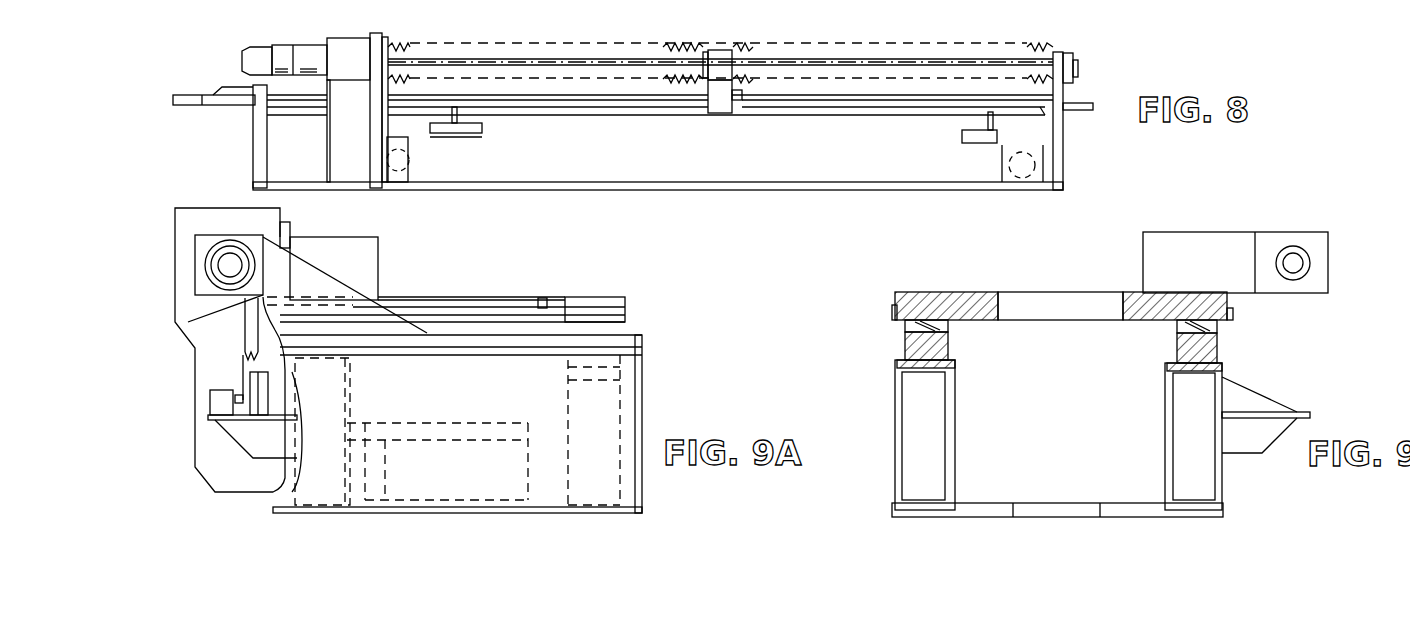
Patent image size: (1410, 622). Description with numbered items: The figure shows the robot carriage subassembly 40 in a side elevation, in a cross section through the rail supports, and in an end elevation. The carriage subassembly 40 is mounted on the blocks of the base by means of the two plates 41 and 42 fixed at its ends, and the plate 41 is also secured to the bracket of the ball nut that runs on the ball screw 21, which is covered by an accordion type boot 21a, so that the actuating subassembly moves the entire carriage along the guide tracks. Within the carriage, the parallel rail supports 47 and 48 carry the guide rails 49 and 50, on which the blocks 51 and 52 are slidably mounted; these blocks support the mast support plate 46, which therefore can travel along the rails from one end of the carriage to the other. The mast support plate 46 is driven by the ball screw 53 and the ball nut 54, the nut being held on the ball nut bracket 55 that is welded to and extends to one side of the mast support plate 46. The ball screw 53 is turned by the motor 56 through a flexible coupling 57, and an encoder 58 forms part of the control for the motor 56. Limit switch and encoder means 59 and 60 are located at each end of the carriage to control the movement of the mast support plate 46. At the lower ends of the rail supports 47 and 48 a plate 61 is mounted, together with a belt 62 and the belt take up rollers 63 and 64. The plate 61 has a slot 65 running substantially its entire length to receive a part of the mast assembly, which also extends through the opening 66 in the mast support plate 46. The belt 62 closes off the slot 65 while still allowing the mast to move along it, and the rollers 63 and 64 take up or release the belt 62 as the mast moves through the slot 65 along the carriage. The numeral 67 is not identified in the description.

In FIG. 9, the ball screw 21 is at (1293, 280).
In FIG. 8, the accordion type boot 21a is at (405, 45).
In FIG. 9A, the carriage subassembly 40 is at (480, 298).
In FIG. 9, the carriage subassembly 40 is at (1050, 292).
In FIG. 8, the plate 41 is at (225, 105).
In FIG. 8, the plate 42 is at (1085, 110).
In FIG. 8, the mast support plate 46 is at (672, 68).
In FIG. 9A, the mast support plate 46 is at (545, 304).
In FIG. 9, the mast support plate 46 is at (990, 318).
In FIG. 9A, the rail support 47 is at (350, 402).
In FIG. 9, the rail support 47 is at (1165, 467).
In FIG. 9A, the rail support 48 is at (643, 422).
In FIG. 9, the rail support 48 is at (952, 418).
In FIG. 9, the guide rail 49 is at (948, 350).
In FIG. 9, the guide rail 50 is at (1217, 345).
In FIG. 9, the block 51 is at (945, 332).
In FIG. 9, the block 52 is at (1230, 331).
In FIG. 8, the ball screw 53 is at (570, 58).
In FIG. 9A, the ball screw 53 is at (250, 255).
In FIG. 8, the ball nut 54 is at (704, 55).
In FIG. 9, the ball nut 54 is at (1307, 267).
In FIG. 8, the ball nut bracket 55 is at (722, 50).
In FIG. 9A, the ball nut bracket 55 is at (350, 252).
In FIG. 9, the ball nut bracket 55 is at (1143, 262).
In FIG. 8, the motor 56 is at (298, 45).
In FIG. 8, the flexible coupling 57 is at (348, 50).
In FIG. 8, the encoder 58 is at (262, 47).
In FIG. 8, the limit switch and encoder means 59 is at (468, 137).
In FIG. 8, the limit switch and encoder means 60 is at (985, 143).
In FIG. 9A, the limit switch and encoder means 60 is at (240, 395).
In FIG. 9A, the plate 61 is at (587, 514).
In FIG. 9, the plate 61 is at (982, 503).
In FIG. 9A, the belt 62 is at (528, 507).
In FIG. 8, the belt take up roller 63 is at (1045, 183).
In FIG. 9A, the belt take up roller 63 is at (505, 423).
In FIG. 8, the belt take up roller 64 is at (406, 183).
In FIG. 9A, the slot 65 is at (415, 507).
In FIG. 9, the slot 65 is at (1020, 503).
In FIG. 9A, the opening 66 is at (412, 306).
In FIG. 9, the opening 66 is at (1122, 310).
In FIG. 9A, the base section 67 is at (480, 507).